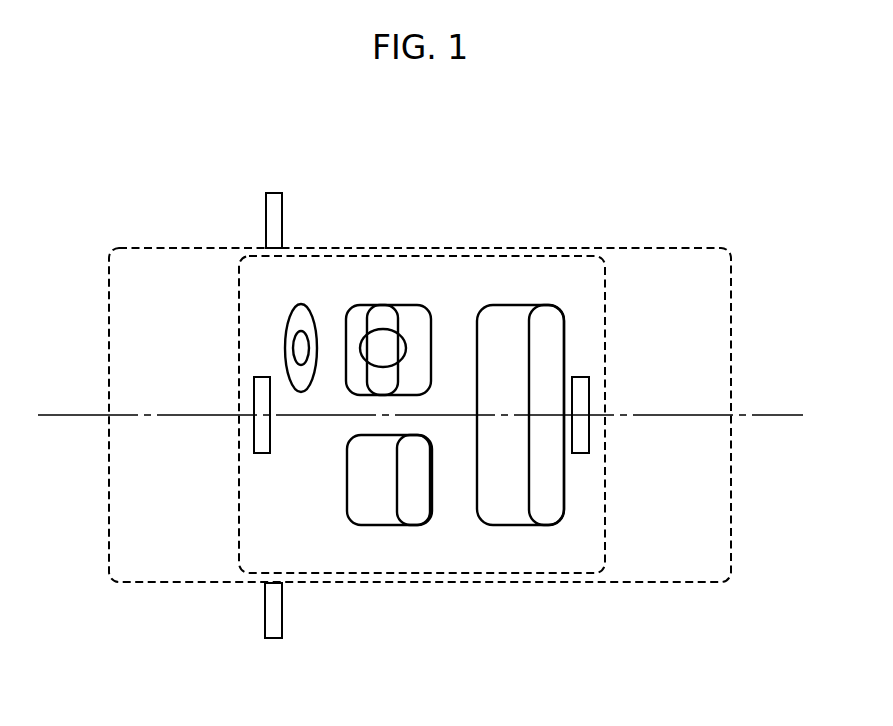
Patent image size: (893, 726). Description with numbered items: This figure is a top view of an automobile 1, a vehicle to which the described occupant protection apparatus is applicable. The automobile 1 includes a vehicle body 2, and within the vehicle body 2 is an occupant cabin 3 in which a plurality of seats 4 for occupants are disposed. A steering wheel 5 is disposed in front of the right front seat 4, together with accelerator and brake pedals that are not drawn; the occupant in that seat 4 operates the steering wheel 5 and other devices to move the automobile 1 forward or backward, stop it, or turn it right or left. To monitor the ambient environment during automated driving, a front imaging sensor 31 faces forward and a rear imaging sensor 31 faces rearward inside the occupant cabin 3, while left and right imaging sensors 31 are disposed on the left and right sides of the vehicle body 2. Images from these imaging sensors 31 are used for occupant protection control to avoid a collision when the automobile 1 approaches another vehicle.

The automobile 1 is at (542, 172).
The vehicle body 2 is at (168, 560).
The occupant cabin 3 is at (433, 558).
The seat 4 is at (410, 325).
The steering wheel 5 is at (307, 305).
The imaging sensor 31 is at (270, 215).